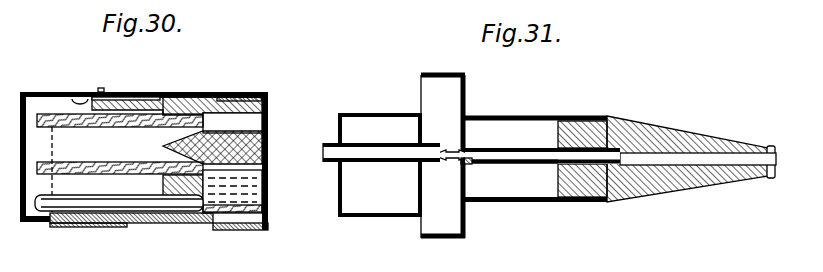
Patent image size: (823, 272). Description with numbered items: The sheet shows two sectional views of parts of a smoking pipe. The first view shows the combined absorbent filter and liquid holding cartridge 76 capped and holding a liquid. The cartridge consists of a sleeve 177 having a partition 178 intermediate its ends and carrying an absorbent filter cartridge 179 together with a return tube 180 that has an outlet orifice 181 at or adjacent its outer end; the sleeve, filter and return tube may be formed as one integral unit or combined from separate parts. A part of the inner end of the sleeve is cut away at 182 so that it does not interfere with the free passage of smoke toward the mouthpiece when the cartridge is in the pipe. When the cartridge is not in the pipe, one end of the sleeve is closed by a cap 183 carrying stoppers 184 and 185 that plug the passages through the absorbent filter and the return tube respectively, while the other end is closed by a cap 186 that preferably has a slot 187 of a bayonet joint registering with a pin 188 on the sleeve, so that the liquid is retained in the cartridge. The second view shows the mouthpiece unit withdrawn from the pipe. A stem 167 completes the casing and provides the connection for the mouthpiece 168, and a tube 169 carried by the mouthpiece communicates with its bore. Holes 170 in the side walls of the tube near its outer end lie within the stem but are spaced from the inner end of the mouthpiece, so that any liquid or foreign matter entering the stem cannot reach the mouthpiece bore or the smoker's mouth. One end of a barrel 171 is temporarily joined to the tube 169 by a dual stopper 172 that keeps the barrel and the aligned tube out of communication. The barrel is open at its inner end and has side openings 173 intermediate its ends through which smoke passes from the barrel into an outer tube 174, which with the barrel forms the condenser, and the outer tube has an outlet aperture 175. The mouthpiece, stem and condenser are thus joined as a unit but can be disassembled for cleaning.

In FIG. 30, the casing 76 is at (156, 97).
In FIG. 30, the sleeve 177 is at (208, 100).
In FIG. 30, the partition 178 is at (232, 123).
In FIG. 30, the absorbent filter cartridge 179 is at (57, 118).
In FIG. 30, the return tube 180 is at (184, 191).
In FIG. 30, the outlet orifice 181 is at (40, 223).
In FIG. 30, the cut-away part of the inner end of the sleeve 182 is at (80, 96).
In FIG. 30, the cap 183 is at (248, 97).
In FIG. 30, the stopper 184 is at (266, 132).
In FIG. 30, the stopper 185 is at (262, 201).
In FIG. 30, the cap 186 is at (30, 92).
In FIG. 30, the slot 187 is at (158, 97).
In FIG. 30, the pin 188 is at (101, 92).
In FIG. 31, the stem 167 is at (470, 114).
In FIG. 31, the mouthpiece 168 is at (667, 140).
In FIG. 31, the tube 169 is at (527, 166).
In FIG. 31, the holes 170 is at (484, 150).
In FIG. 31, the barrel 171 is at (392, 143).
In FIG. 31, the dual stopper 172 is at (447, 150).
In FIG. 31, the side openings 173 is at (374, 158).
In FIG. 31, the outer tube 174 is at (340, 178).
In FIG. 31, the outlet aperture 175 is at (347, 212).